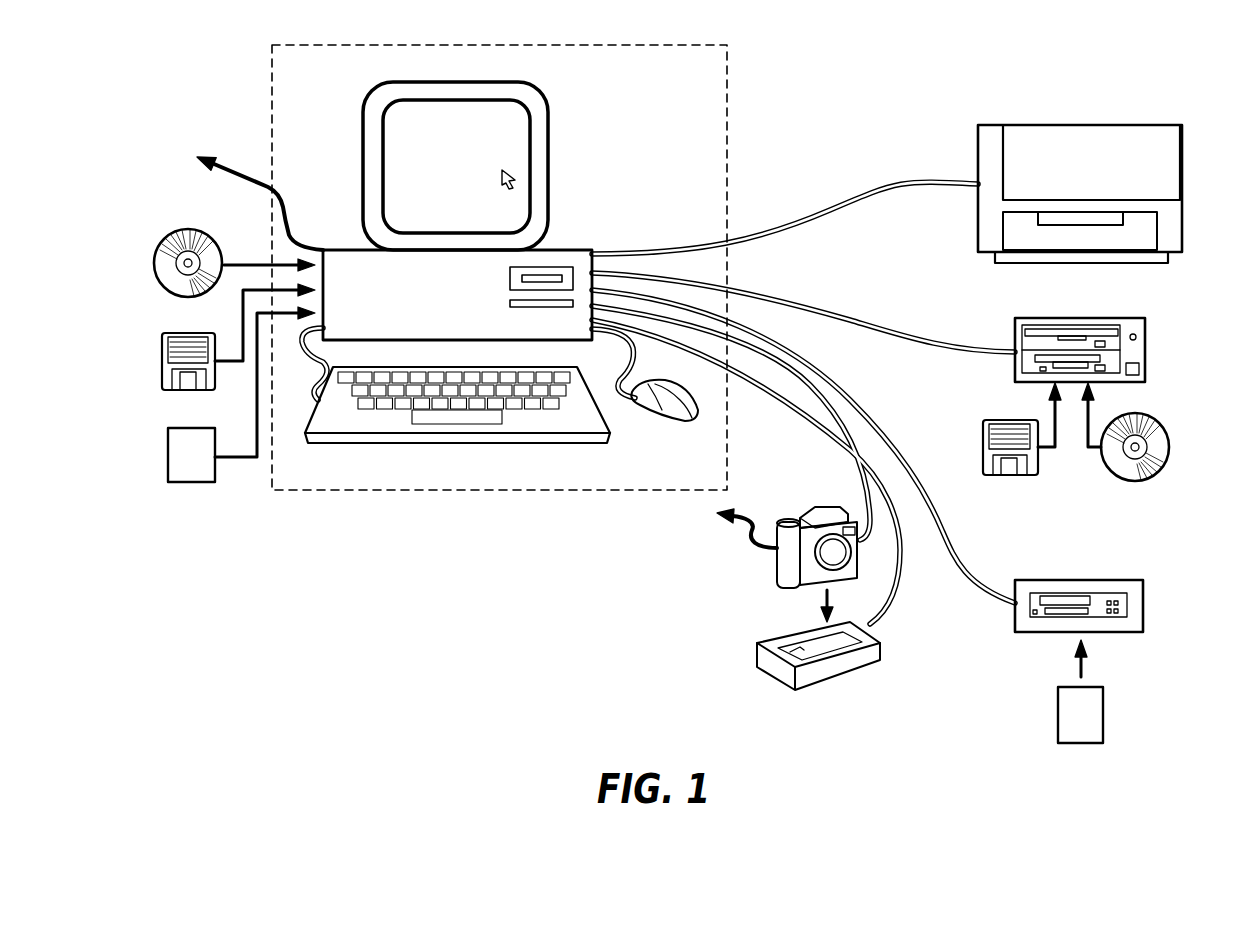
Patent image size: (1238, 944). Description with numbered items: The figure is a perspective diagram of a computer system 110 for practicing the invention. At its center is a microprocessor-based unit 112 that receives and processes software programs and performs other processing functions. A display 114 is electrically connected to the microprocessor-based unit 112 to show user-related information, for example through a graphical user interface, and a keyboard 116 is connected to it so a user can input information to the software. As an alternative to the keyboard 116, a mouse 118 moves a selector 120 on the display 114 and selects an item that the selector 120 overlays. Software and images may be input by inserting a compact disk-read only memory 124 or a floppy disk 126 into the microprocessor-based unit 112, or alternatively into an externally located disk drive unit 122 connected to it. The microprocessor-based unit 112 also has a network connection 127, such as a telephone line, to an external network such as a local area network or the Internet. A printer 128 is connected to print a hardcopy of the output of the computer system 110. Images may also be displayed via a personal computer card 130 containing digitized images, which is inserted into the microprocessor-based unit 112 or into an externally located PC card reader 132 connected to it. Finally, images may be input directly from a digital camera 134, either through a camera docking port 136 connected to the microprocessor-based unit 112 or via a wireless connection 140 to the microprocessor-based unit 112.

The computer system 110 is at (267, 92).
The microprocessor-based unit 112 is at (349, 250).
The display 114 is at (368, 90).
The keyboard 116 is at (385, 444).
The mouse 118 is at (646, 415).
The selector 120 is at (515, 178).
The externally located disk drive unit 122 is at (1147, 345).
The compact disk-read only memory (CD-ROM) 124 is at (155, 265).
The floppy disk 126 is at (162, 367).
The network connection 127 is at (242, 175).
The printer 128 is at (1068, 125).
The personal computer card (PC card) 130 is at (168, 458).
The PC card reader 132 is at (1145, 603).
The digital camera 134 is at (818, 507).
The camera docking port 136 is at (757, 657).
The wireless connection 140 is at (746, 540).